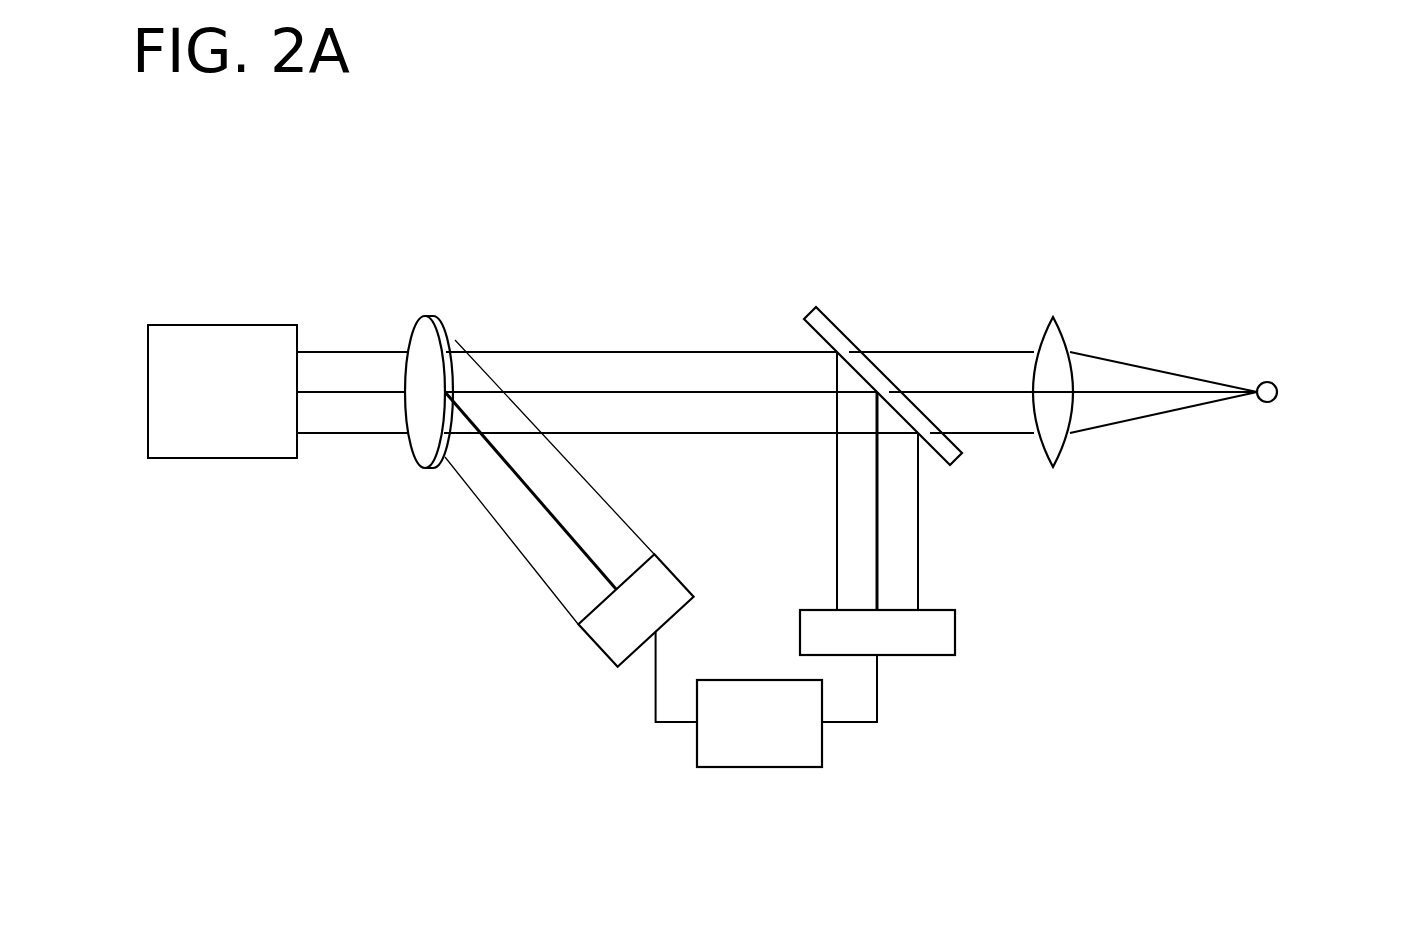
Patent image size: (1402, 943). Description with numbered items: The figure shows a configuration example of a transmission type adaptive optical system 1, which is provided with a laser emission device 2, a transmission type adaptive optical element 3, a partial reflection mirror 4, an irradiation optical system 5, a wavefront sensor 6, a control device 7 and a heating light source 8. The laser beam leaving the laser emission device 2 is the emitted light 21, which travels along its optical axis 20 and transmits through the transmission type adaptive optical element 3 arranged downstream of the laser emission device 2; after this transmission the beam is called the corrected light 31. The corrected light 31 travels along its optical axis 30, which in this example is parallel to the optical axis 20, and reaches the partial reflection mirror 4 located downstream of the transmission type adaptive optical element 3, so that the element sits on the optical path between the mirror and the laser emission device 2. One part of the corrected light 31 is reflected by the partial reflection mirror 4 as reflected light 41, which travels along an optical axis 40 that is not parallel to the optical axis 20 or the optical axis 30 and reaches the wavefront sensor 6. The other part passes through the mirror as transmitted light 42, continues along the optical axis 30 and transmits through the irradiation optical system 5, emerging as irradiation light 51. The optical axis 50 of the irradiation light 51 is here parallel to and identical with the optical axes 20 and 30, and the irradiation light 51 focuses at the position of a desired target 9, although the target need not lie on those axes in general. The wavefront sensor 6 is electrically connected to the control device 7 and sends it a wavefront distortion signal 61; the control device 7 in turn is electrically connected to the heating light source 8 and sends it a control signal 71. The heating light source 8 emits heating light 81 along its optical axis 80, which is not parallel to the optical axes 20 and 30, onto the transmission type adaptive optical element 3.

The transmission type adaptive optical system 1 is at (1002, 140).
The laser emission device 2 is at (237, 458).
The transmission type adaptive optical element 3 is at (421, 317).
The partial reflection mirror 4 is at (806, 317).
The irradiation optical system 5 is at (1100, 275).
The wavefront sensor 6 is at (957, 642).
The control device 7 is at (752, 768).
The heating light source 8 is at (587, 637).
The target 9 is at (1268, 381).
The optical axis 20 is at (360, 393).
The emitted light 21 is at (348, 315).
The optical axis 30 is at (696, 394).
The corrected light 31 is at (587, 318).
The optical axis 40 is at (876, 584).
The reflected light 41 is at (919, 570).
The transmitted light 42 is at (958, 351).
The optical axis 50 is at (1113, 394).
The irradiation light 51 is at (1208, 403).
The wavefront distortion signal 61 is at (857, 725).
The control signal 71 is at (655, 712).
The optical axis 80 is at (540, 505).
The heating light 81 is at (591, 499).